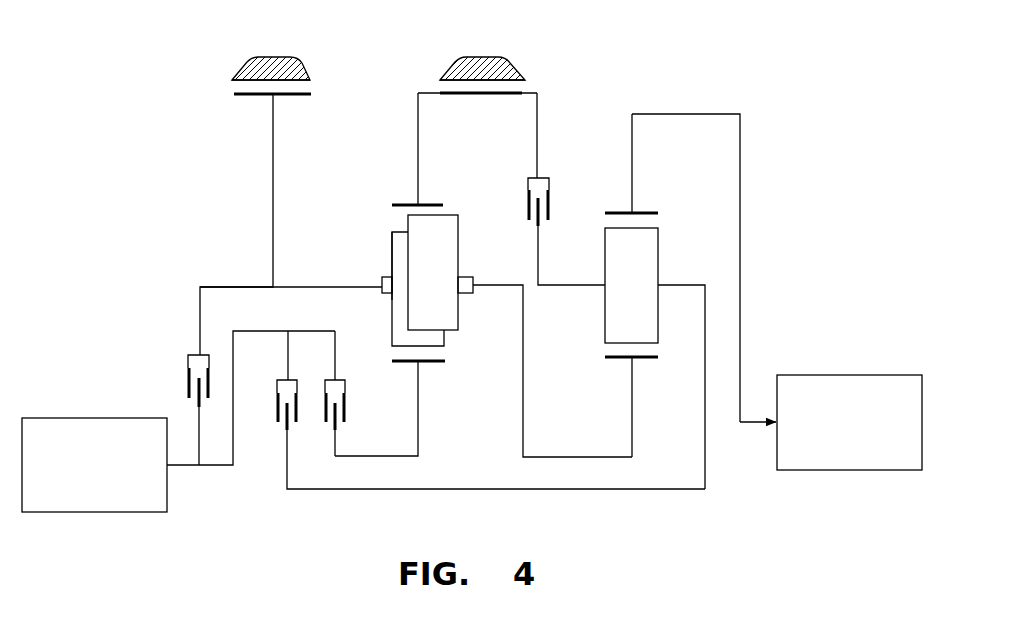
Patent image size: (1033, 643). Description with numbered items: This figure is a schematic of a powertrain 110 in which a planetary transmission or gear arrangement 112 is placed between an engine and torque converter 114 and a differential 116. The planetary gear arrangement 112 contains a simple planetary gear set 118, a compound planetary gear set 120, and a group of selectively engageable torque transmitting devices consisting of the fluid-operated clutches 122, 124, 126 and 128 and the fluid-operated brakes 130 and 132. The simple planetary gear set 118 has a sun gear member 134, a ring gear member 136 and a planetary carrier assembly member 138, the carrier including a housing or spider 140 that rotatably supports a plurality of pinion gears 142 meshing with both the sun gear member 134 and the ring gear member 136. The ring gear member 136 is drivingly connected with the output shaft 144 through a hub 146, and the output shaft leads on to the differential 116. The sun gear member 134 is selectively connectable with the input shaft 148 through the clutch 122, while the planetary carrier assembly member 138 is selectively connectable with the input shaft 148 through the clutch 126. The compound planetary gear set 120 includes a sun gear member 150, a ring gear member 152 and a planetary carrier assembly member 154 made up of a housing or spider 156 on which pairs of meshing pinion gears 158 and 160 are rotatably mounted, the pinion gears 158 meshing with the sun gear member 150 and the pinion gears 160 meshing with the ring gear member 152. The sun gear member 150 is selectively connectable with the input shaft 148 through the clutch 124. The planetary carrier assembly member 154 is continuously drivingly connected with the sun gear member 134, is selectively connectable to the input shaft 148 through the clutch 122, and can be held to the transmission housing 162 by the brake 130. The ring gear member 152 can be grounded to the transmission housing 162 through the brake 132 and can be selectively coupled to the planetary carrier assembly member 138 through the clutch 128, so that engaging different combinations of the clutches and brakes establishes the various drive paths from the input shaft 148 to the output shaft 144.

The powertrain 110 is at (212, 196).
The planetary transmission or gear arrangement 112 is at (605, 145).
The engine and torque converter 114 is at (60, 515).
The differential 116 is at (898, 375).
The simple planetary gear set 118 is at (587, 318).
The compound planetary gear set 120 is at (405, 272).
The clutch 122 is at (185, 382).
The clutch 124 is at (347, 405).
The clutch 126 is at (275, 405).
The clutch 128 is at (550, 200).
The brake 130 is at (236, 70).
The brake 132 is at (529, 68).
The sun gear member 134 is at (632, 360).
The ring gear member 136 is at (642, 212).
The planetary carrier assembly member 138 is at (680, 215).
The housing or spider 140 is at (705, 282).
The pinion gears 142 is at (618, 278).
The output shaft 144 is at (747, 428).
The hub 146 is at (715, 114).
The input shaft 148 is at (180, 468).
The sun gear member 150 is at (430, 365).
The ring gear member 152 is at (428, 203).
The planetary carrier assembly member 154 is at (378, 228).
The housing or spider 156 is at (488, 285).
The pinion gears 158 is at (399, 262).
The pinion gears 160 is at (455, 225).
The transmission housing 162 is at (265, 57).